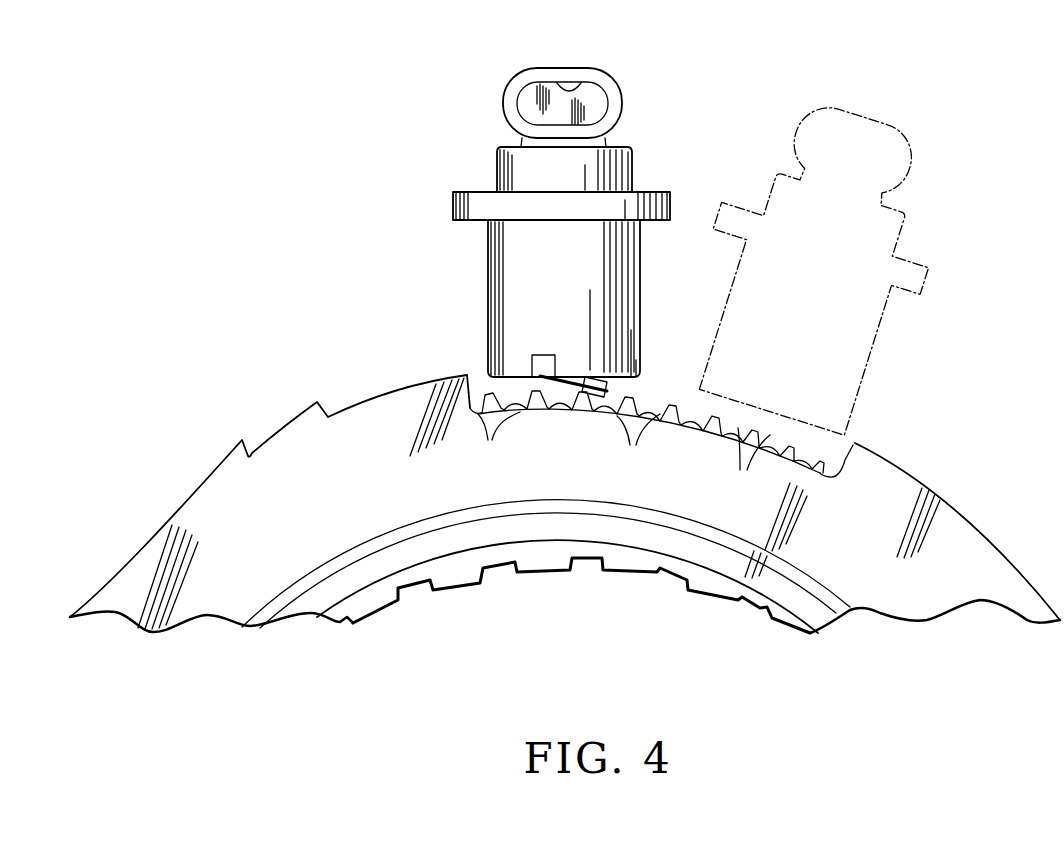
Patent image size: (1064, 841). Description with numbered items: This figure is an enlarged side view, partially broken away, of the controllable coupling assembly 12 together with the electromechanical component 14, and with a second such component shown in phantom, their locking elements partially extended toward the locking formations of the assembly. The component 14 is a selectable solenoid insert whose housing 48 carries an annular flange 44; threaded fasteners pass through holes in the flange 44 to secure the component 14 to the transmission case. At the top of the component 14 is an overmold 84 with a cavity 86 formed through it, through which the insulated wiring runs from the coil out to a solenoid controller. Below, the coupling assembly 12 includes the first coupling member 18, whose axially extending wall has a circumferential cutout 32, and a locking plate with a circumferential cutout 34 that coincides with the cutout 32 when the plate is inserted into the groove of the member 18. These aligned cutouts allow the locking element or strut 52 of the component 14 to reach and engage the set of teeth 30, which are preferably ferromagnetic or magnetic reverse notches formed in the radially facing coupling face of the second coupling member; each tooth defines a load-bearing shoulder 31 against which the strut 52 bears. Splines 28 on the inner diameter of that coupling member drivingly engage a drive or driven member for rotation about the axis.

The controllable coupling assembly 12 is at (566, 494).
The electromechanical component 14 is at (719, 234).
The first coupling member 18 is at (566, 504).
The splines 28 is at (710, 603).
The teeth 30 is at (680, 403).
The load-bearing second surface or shoulder 31 is at (623, 456).
The circumferential cutout 32 is at (845, 445).
The circumferential cutout 34 is at (688, 433).
The annular flange 44 is at (669, 211).
The housing 48 is at (482, 284).
The locking element or strut 52 is at (607, 388).
The overmold 84 is at (737, 81).
The cavity 86 is at (560, 83).